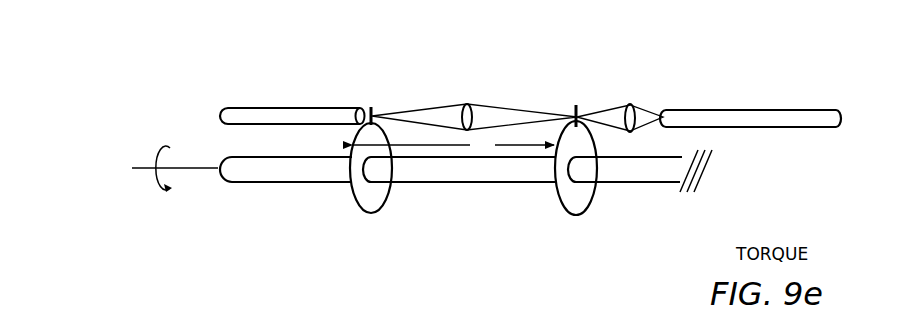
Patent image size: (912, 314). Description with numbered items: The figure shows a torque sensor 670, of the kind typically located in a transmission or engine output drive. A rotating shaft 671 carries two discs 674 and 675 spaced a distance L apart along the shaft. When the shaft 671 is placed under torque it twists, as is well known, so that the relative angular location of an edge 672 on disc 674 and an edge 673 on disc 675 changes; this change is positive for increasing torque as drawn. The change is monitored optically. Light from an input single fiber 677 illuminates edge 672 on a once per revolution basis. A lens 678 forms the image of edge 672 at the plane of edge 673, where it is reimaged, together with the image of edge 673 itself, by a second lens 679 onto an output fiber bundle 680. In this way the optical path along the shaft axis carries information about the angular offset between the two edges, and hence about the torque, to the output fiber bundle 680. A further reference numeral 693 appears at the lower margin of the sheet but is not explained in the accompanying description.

The torque sensor 670 is at (200, 88).
The rotating shaft 671 is at (297, 180).
The edge 672 is at (372, 106).
The edge 673 is at (578, 105).
The disc 674 is at (384, 200).
The disc 675 is at (590, 200).
The input single fiber 677 is at (300, 105).
The lens 678 is at (468, 103).
The lens 679 is at (634, 105).
The output fiber bundle 680 is at (802, 112).
The element 693 is at (283, 307).